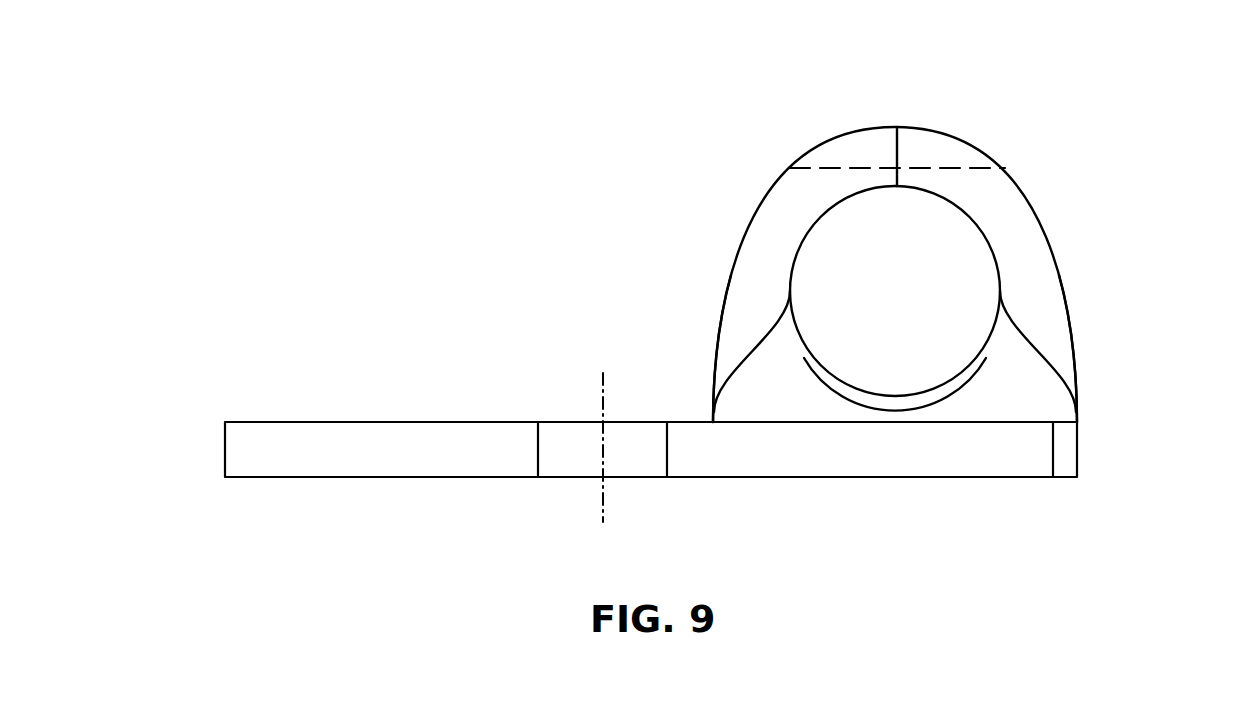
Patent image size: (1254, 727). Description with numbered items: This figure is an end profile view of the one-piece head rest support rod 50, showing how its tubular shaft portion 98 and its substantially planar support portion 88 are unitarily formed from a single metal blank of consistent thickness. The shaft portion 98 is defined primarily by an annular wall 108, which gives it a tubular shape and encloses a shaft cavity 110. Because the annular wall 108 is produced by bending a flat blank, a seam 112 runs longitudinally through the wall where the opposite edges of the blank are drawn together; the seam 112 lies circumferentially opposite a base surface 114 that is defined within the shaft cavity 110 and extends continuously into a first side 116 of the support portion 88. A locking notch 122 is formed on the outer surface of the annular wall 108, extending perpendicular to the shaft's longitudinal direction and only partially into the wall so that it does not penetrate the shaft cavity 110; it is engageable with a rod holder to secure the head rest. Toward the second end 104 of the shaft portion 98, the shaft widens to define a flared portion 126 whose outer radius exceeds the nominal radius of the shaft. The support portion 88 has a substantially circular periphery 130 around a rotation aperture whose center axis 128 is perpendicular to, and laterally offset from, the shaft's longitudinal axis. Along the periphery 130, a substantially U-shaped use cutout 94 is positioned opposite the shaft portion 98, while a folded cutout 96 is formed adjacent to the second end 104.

The support rod 50 is at (558, 272).
The support portion 88 is at (293, 422).
The use cutout 94 is at (540, 437).
The folded cutout 96 is at (1053, 462).
The shaft portion 98 is at (970, 143).
The second end 104 is at (765, 247).
The annular wall 108 is at (1037, 280).
The shaft cavity 110 is at (952, 246).
The seam 112 is at (903, 140).
The base surface 114 is at (866, 390).
The first side 116 is at (398, 422).
The locking notch 122 is at (830, 167).
The flared portion 126 is at (720, 322).
The center axis 128 is at (605, 512).
The substantially circular periphery 130 is at (277, 467).